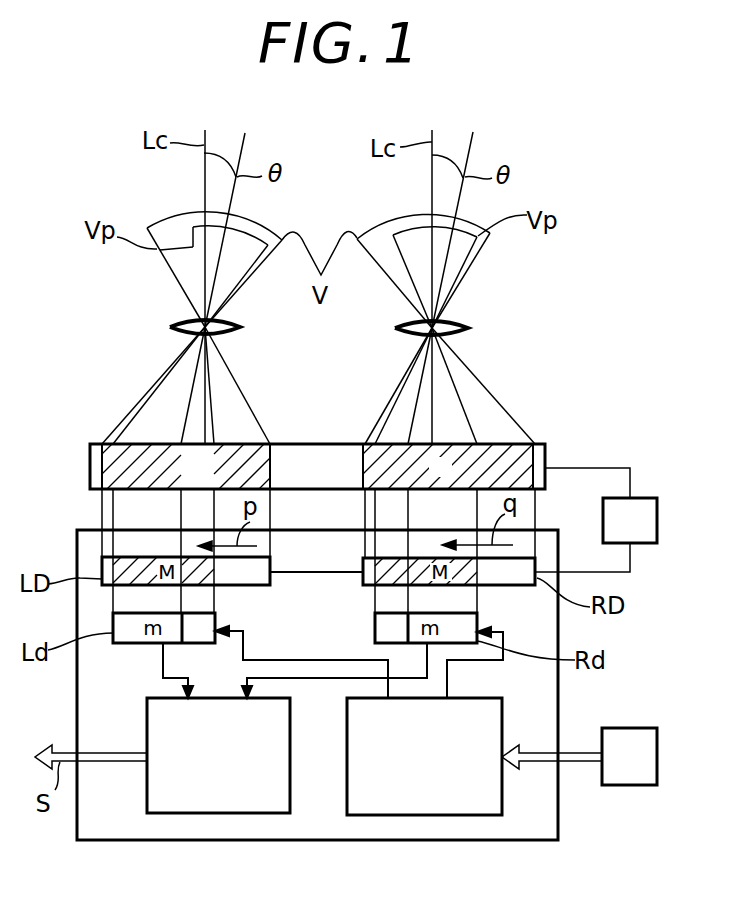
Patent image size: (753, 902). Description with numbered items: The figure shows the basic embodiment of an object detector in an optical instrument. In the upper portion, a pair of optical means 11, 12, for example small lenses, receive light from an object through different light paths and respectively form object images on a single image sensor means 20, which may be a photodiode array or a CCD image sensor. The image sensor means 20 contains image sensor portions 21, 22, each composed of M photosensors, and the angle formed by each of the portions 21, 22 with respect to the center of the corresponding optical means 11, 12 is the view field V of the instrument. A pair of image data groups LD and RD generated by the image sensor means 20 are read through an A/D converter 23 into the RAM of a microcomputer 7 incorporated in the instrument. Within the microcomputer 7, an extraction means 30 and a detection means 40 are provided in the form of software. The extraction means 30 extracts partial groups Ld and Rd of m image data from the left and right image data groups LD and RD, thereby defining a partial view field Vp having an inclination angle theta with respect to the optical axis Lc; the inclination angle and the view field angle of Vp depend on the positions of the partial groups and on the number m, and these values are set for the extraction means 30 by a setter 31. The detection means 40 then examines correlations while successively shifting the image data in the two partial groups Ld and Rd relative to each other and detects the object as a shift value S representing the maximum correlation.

The microcomputer 7 is at (90, 840).
The optical means 11 is at (175, 325).
The optical means 12 is at (470, 337).
The image sensor means 20 is at (90, 458).
The image sensor portion 21 is at (272, 467).
The image sensor portion 22 is at (505, 446).
The A/D converter 23 is at (660, 507).
The extraction means 30 is at (490, 815).
The setter 31 is at (648, 785).
The detection means 40 is at (172, 813).